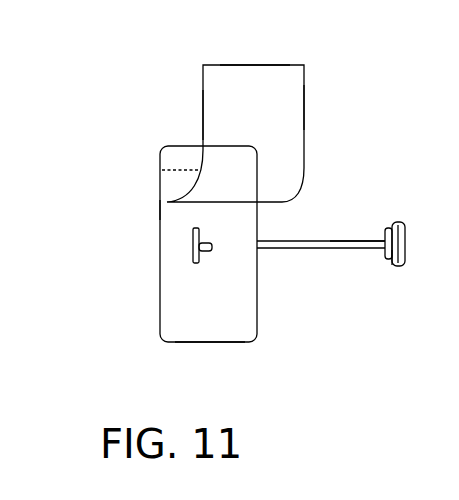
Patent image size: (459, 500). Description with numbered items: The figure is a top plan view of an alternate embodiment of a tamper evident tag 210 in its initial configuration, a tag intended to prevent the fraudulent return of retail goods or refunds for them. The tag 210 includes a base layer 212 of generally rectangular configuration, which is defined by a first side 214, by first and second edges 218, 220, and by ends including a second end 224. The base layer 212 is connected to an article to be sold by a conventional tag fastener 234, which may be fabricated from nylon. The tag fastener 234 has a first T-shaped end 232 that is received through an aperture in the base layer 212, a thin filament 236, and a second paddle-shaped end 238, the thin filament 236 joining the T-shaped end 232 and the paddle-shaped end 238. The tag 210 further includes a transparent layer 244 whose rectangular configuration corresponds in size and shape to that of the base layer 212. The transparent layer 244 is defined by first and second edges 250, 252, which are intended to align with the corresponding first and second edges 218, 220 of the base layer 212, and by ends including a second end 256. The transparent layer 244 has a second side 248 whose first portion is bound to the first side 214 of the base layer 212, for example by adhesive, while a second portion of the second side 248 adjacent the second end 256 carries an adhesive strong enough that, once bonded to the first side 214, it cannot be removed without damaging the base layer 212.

The tamper evident tag 210 is at (121, 223).
The base layer 212 is at (162, 270).
The first side 214 is at (240, 312).
The first edge 218 is at (160, 210).
The second edge 220 is at (257, 223).
The second end 224 is at (185, 344).
The first T-shaped end 232 is at (196, 228).
The tag fastener 234 is at (407, 222).
The thin filament 236 is at (352, 241).
The second paddle-shaped end 238 is at (392, 267).
The transparent layer 244 is at (286, 62).
The second side 248 is at (268, 117).
The first edge 250 is at (204, 112).
The second edge 252 is at (305, 103).
The second end 256 is at (257, 63).